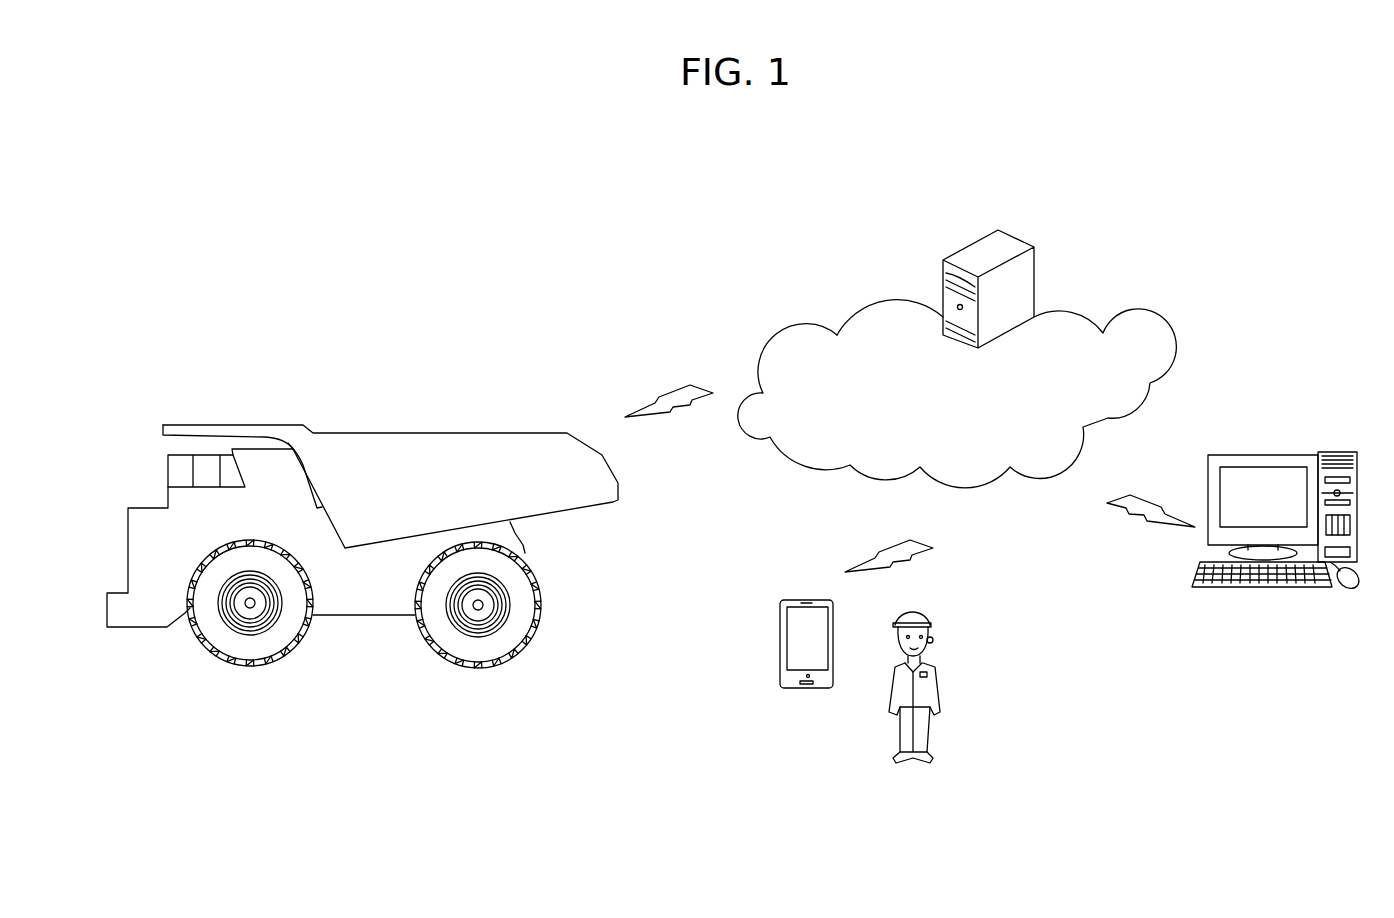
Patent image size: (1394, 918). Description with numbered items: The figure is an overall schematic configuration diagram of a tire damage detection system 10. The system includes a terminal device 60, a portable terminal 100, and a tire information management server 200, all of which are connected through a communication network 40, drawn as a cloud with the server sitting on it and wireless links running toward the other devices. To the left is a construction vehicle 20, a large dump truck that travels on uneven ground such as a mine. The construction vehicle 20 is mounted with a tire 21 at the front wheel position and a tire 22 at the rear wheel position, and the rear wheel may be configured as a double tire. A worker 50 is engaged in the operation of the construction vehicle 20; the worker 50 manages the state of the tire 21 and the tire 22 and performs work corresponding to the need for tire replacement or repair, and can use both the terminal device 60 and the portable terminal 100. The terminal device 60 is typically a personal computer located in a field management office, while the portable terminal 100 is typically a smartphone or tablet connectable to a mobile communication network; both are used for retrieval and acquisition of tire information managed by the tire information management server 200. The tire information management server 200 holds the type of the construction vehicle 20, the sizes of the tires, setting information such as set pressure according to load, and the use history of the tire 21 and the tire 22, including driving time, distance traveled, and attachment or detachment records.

The tire damage detection system 10 is at (1193, 230).
The construction vehicle 20 is at (437, 447).
The tire 21 is at (258, 655).
The tire 22 is at (482, 652).
The communication network 40 is at (1093, 318).
The worker 50 is at (940, 683).
The terminal device 60 is at (1277, 455).
The portable terminal 100 is at (780, 630).
The tire information management server 200 is at (1012, 237).